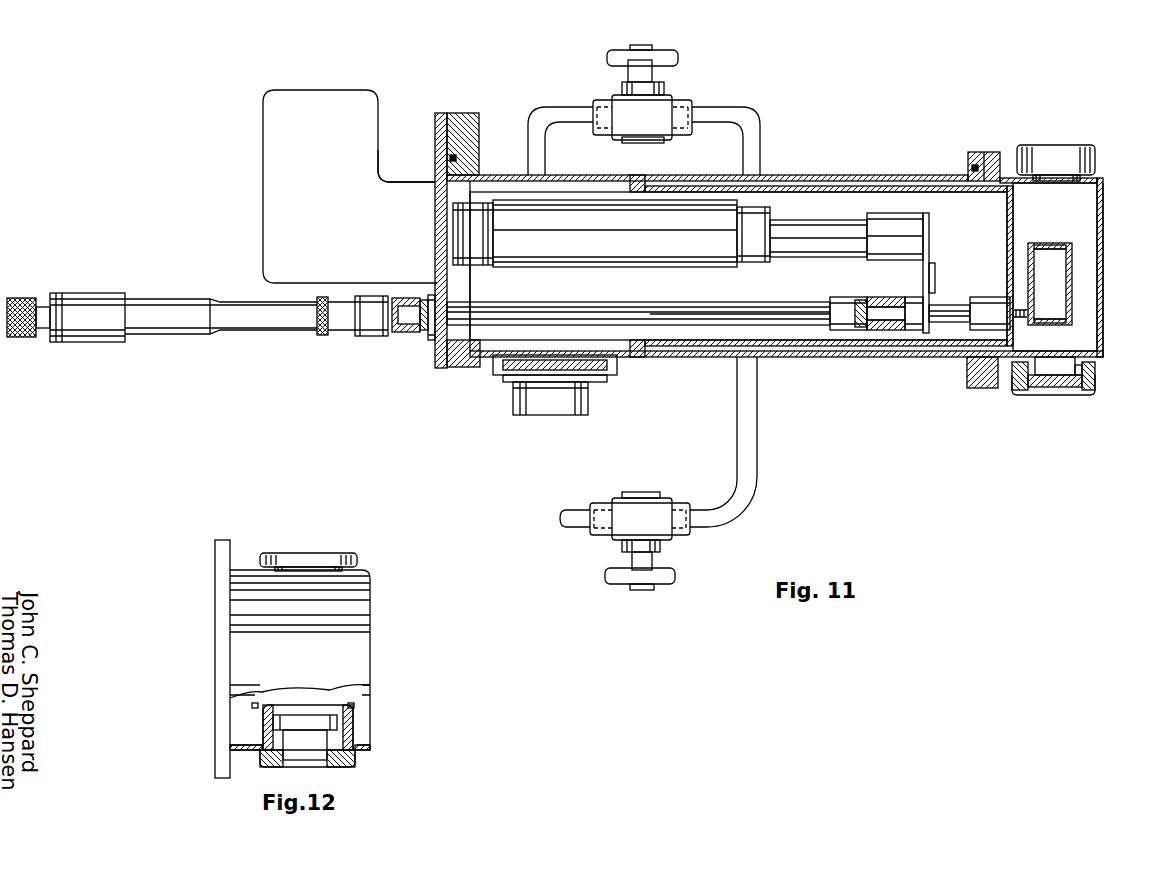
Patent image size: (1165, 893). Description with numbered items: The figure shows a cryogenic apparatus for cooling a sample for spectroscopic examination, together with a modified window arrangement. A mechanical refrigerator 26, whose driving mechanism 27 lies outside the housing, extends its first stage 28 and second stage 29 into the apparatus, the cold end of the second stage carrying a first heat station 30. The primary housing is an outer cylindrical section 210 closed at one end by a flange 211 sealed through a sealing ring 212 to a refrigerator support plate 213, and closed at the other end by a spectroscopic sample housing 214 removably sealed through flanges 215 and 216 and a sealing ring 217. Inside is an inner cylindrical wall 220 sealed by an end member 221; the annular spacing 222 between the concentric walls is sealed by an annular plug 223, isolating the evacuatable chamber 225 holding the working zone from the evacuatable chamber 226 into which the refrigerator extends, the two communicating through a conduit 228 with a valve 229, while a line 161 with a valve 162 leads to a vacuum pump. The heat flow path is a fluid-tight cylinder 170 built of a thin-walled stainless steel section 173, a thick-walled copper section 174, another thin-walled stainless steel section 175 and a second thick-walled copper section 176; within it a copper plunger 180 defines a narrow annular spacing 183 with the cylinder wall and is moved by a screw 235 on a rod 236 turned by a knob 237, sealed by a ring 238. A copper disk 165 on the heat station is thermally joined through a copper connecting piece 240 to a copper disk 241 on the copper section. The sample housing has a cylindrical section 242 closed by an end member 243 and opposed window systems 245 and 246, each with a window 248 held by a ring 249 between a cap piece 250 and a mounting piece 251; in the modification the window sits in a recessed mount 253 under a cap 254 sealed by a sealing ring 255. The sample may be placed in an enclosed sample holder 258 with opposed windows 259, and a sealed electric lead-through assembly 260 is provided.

In FIG. 11, the mechanical refrigerator 26 is at (393, 173).
In FIG. 11, the driving mechanism 27 is at (341, 236).
In FIG. 11, the first stage 28 is at (584, 239).
In FIG. 11, the second stage 29 is at (806, 248).
In FIG. 11, the first heat station 30 is at (884, 248).
In FIG. 11, the line 161 is at (757, 449).
In FIG. 11, the valve 162 is at (668, 515).
In FIG. 11, the copper disk 165 is at (930, 222).
In FIG. 11, the fluid-tight cylinder 170 is at (546, 300).
In FIG. 11, the thin-walled stainless steel section 173 is at (655, 316).
In FIG. 11, the thick-walled copper section 174 is at (848, 300).
In FIG. 11, the thin-walled stainless steel section 175 is at (945, 312).
In FIG. 11, the second thick-walled copper section 176 is at (990, 297).
In FIG. 11, the copper plunger 180 is at (862, 338).
In FIG. 11, the annular spacing 183 is at (896, 338).
In FIG. 11, the outer cylindrical section 210 is at (840, 180).
In FIG. 11, the flange 211 is at (464, 113).
In FIG. 11, the sealing ring 212 is at (456, 159).
In FIG. 11, the refrigerator support plate 213 is at (441, 113).
In FIG. 11, the spectroscopic sample housing 214 is at (1040, 139).
In FIG. 12, the spectroscopic sample housing 214 is at (309, 550).
In FIG. 11, the flange 215 is at (977, 172).
In FIG. 11, the flange 216 is at (985, 154).
In FIG. 12, the flange 216 is at (222, 545).
In FIG. 11, the sealing ring 217 is at (974, 168).
In FIG. 11, the inner cylindrical wall 220 is at (888, 191).
In FIG. 11, the end member 221 is at (1013, 215).
In FIG. 11, the annular spacing 222 is at (785, 186).
In FIG. 11, the annular plug 223 is at (640, 180).
In FIG. 11, the evacuatable chamber 225 is at (1034, 229).
In FIG. 11, the evacuatable chamber 226 is at (732, 294).
In FIG. 11, the conduit 228 is at (752, 118).
In FIG. 11, the valve 229 is at (665, 100).
In FIG. 11, the screw 235 is at (422, 333).
In FIG. 11, the rod 236 is at (403, 326).
In FIG. 11, the knob 237 is at (20, 297).
In FIG. 11, the ring 238 is at (430, 339).
In FIG. 11, the copper connecting piece 240 is at (933, 265).
In FIG. 11, the copper disk 241 is at (922, 294).
In FIG. 11, the cylindrical section 242 is at (1100, 179).
In FIG. 12, the cylindrical section 242 is at (350, 629).
In FIG. 11, the end member 243 is at (1103, 296).
In FIG. 12, the end member 243 is at (372, 599).
In FIG. 11, the window system 245 is at (1068, 137).
In FIG. 12, the window system 245 is at (361, 552).
In FIG. 11, the window system 246 is at (1022, 398).
In FIG. 12, the window system 246 is at (361, 763).
In FIG. 11, the window 248 is at (1068, 389).
In FIG. 12, the window 248 is at (298, 715).
In FIG. 11, the ring 249 is at (1015, 389).
In FIG. 11, the cap piece 250 is at (1094, 395).
In FIG. 11, the mounting piece 251 is at (1093, 372).
In FIG. 12, the recessed mount 253 is at (354, 723).
In FIG. 12, the cap 254 is at (268, 766).
In FIG. 12, the sealing ring 255 is at (356, 708).
In FIG. 11, the enclosed sample holder 258 is at (1072, 266).
In FIG. 11, the windows 259 is at (1052, 245).
In FIG. 11, the sealed electric lead-through assembly 260 is at (601, 404).